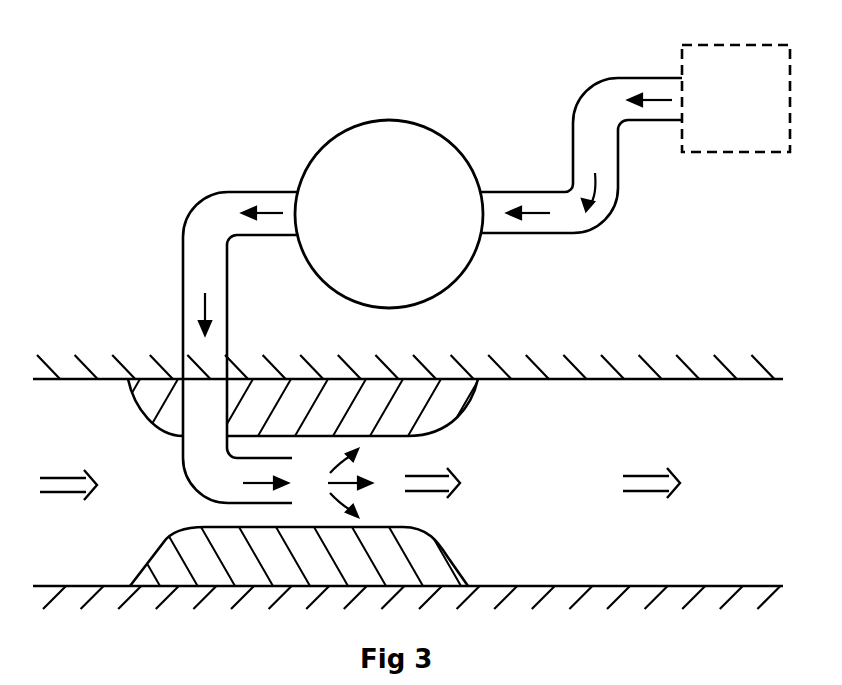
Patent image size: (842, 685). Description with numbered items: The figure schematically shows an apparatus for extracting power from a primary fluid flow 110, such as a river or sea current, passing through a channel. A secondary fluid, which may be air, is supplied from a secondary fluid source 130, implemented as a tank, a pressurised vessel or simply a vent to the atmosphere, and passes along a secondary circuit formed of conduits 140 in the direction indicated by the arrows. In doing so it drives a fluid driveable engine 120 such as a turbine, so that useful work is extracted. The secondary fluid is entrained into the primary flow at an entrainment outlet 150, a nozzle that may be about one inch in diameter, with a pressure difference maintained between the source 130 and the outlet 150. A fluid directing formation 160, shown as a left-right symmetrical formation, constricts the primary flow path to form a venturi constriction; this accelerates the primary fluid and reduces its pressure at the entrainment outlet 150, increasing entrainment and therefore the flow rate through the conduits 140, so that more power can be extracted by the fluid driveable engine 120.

The fluid flow 110 is at (408, 482).
The fluid driveable engine 120 is at (389, 214).
The secondary fluid source 130 is at (736, 98).
The conduits 140 is at (598, 212).
The entrainment outlet 150 is at (365, 470).
The fluid directing formation 160 is at (153, 567).